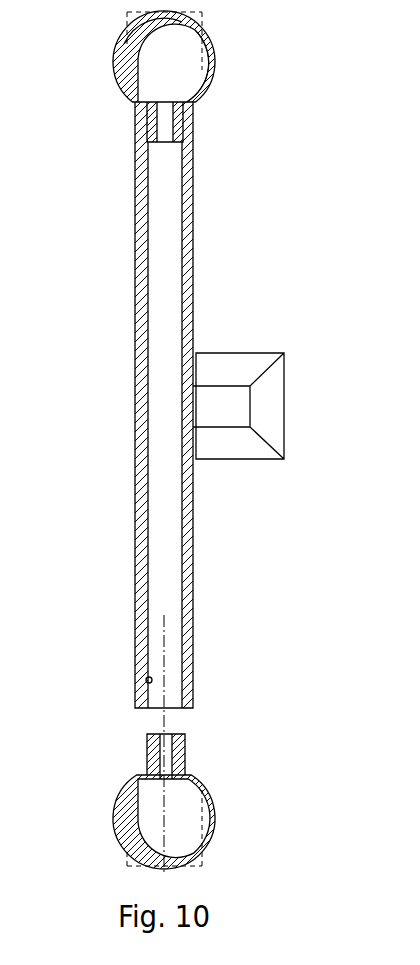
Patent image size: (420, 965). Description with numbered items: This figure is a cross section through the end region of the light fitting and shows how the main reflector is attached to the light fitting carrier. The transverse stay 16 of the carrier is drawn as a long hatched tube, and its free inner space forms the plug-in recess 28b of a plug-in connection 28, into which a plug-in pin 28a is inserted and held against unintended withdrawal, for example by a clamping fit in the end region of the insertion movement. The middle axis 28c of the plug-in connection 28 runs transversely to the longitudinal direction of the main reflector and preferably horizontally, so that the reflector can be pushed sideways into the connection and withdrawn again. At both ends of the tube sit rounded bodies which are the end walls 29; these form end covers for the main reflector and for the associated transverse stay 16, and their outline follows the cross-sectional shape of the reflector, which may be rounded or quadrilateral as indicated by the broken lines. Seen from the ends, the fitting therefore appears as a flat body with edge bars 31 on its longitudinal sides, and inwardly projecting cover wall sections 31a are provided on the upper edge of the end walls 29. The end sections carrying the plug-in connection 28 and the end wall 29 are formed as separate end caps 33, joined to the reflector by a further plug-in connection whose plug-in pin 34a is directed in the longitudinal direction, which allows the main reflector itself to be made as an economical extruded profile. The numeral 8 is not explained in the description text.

The transverse stay 16 is at (190, 270).
The plug-in connection 28 is at (220, 434).
The coupling element 8 is at (200, 110).
The plug-in pin 28a is at (184, 753).
The plug-in recess 28b is at (147, 681).
The middle axis 28c is at (170, 640).
The end wall 29 is at (195, 42).
The edge bar 31 is at (147, 56).
The end cap 33 is at (165, 56).
The cover wall section 31a is at (214, 65).
The plug-in pin 34a is at (126, 41).